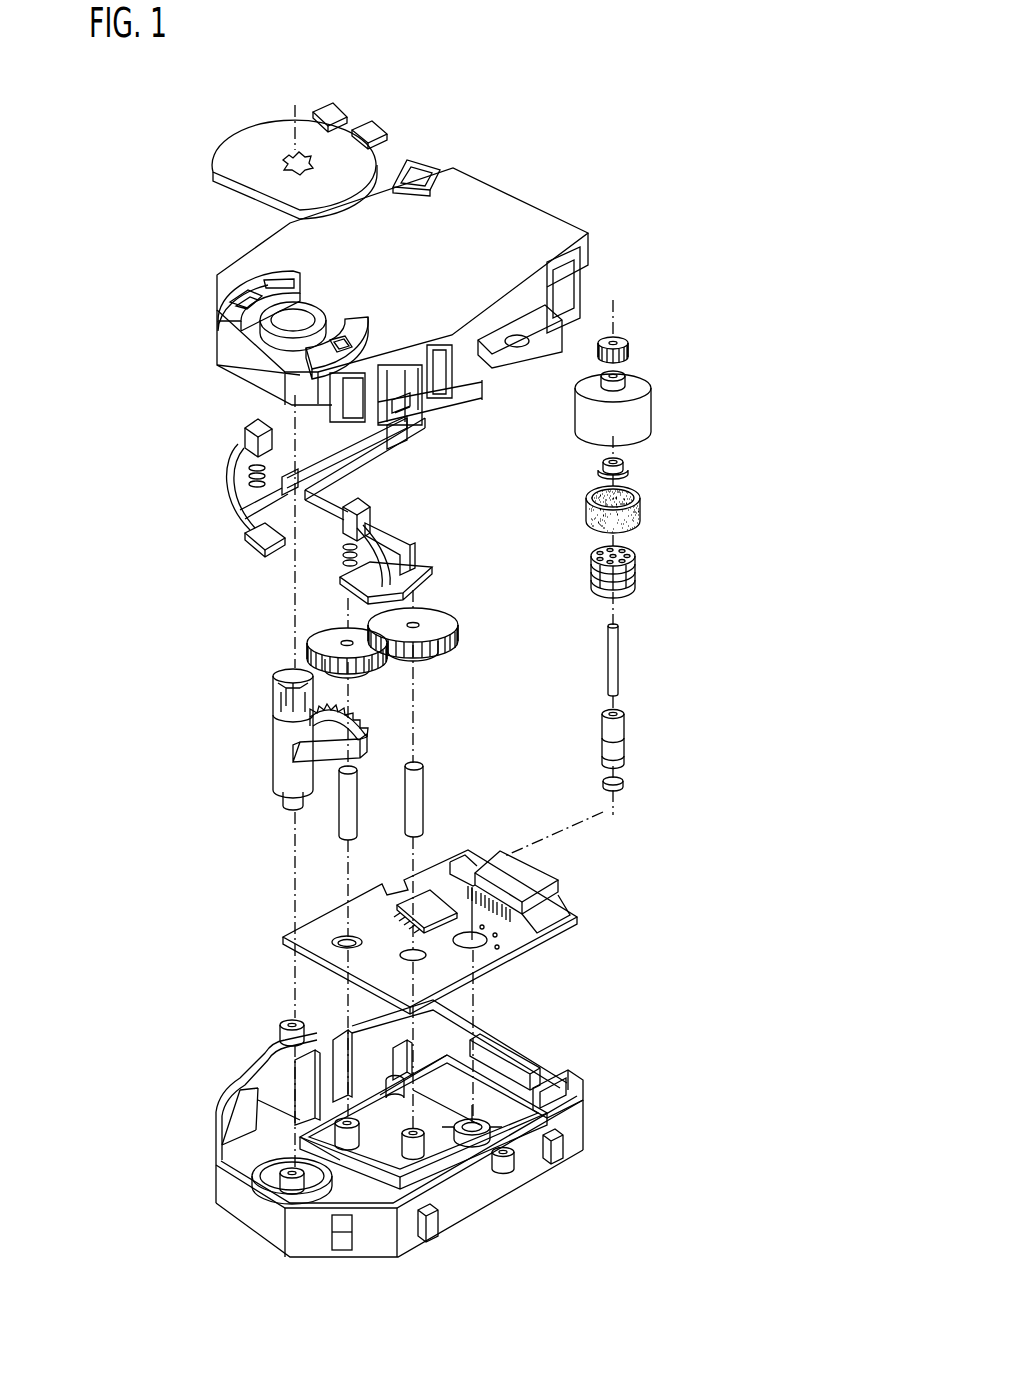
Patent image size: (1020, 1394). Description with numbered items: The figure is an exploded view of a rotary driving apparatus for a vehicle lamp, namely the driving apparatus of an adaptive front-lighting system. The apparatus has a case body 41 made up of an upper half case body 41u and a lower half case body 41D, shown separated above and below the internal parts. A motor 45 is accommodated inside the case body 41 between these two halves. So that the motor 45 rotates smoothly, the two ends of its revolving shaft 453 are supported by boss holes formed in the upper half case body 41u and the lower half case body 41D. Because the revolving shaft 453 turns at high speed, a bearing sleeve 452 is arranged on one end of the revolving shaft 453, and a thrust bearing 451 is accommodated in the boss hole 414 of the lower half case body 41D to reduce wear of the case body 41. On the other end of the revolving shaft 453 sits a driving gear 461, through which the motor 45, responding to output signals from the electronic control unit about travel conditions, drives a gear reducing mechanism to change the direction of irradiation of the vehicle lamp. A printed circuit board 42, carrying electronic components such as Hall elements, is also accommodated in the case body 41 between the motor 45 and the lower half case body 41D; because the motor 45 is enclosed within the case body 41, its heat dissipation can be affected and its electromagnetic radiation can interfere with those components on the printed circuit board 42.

The case body 41 is at (563, 172).
The upper half case body 41u is at (487, 200).
The lower half case body 41D is at (578, 1130).
The printed circuit board 42 is at (578, 922).
The motor 45 is at (658, 388).
The thrust bearing 451 is at (625, 785).
The bearing sleeve 452 is at (612, 737).
The revolving shaft 453 is at (622, 655).
The driving gear 461 is at (632, 348).
The boss hole 414 is at (540, 1080).